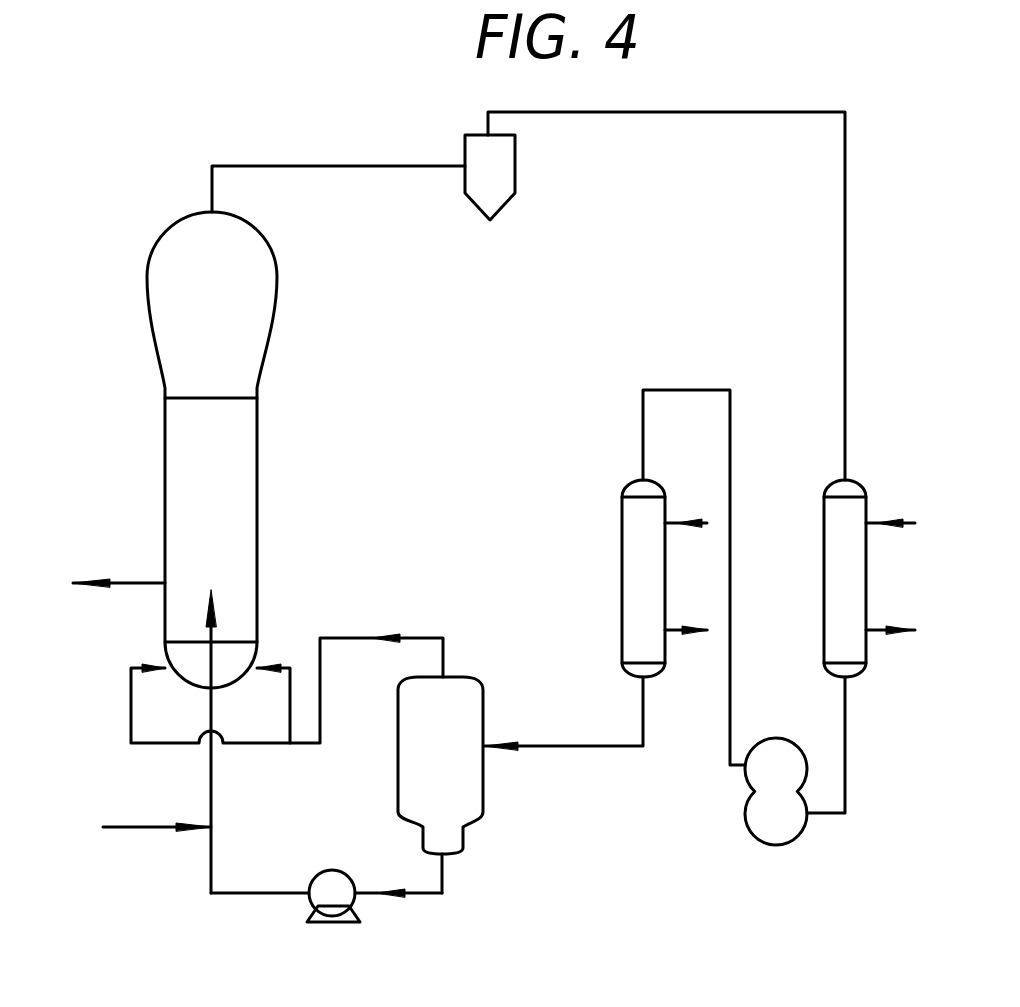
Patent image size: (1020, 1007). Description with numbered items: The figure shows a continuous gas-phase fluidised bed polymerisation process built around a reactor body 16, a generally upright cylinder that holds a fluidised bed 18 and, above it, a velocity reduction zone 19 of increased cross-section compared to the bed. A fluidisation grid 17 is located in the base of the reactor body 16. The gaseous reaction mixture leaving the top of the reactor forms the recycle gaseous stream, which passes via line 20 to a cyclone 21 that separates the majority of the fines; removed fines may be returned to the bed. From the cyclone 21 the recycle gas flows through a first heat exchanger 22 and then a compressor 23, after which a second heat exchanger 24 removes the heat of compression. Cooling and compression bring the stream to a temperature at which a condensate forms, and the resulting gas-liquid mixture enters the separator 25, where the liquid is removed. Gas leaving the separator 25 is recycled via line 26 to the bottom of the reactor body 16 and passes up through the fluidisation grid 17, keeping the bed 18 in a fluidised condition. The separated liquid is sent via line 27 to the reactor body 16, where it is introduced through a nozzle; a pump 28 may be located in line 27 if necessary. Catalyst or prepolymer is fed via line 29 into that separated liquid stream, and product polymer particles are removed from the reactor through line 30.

The reactor body 16 is at (165, 382).
The fluidisation grid 17 is at (223, 640).
The fluidised bed 18 is at (227, 517).
The velocity reduction zone 19 is at (182, 298).
The line 20 is at (332, 166).
The cyclone 21 is at (498, 182).
The first heat exchanger 22 is at (847, 547).
The compressor 23 is at (777, 813).
The second heat exchanger 24 is at (640, 532).
The separator 25 is at (460, 793).
The line 26 is at (308, 747).
The line 27 is at (423, 898).
The pump 28 is at (330, 923).
The line 29 is at (152, 830).
The line 30 is at (135, 586).